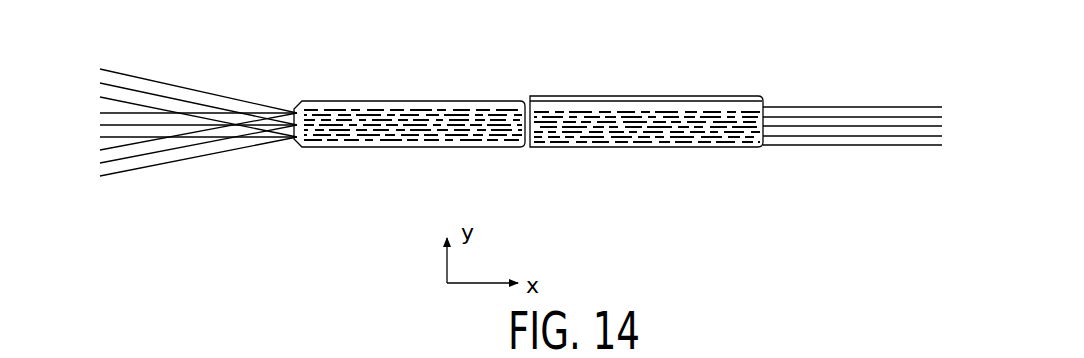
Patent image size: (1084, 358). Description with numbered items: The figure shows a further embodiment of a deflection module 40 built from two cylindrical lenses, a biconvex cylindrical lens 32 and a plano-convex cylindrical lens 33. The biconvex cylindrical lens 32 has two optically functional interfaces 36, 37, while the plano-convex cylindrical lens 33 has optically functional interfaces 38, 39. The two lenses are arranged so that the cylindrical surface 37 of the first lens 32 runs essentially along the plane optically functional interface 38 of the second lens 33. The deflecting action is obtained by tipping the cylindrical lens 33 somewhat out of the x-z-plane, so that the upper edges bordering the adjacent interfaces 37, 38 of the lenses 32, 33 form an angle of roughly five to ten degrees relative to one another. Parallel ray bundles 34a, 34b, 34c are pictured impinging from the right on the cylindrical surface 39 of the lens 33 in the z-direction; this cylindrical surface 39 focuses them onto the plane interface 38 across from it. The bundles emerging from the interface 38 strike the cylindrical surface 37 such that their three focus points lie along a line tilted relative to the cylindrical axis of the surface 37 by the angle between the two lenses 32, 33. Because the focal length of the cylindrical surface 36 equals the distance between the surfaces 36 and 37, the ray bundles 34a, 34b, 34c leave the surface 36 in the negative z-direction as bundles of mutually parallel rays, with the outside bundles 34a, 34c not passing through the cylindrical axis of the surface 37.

The biconvex cylindrical lens 32 is at (391, 148).
The plano-convex cylindrical lens 33 is at (662, 149).
The ray bundle 34a is at (119, 163).
The ray bundle 34b is at (153, 125).
The ray bundle 34c is at (121, 84).
The optically functional interface 36 is at (296, 112).
The optically functional interface 37 is at (526, 110).
The plane optically functional interface 38 is at (526, 108).
The optically functional interface 39 is at (765, 147).
The deflection module 40 is at (583, 78).